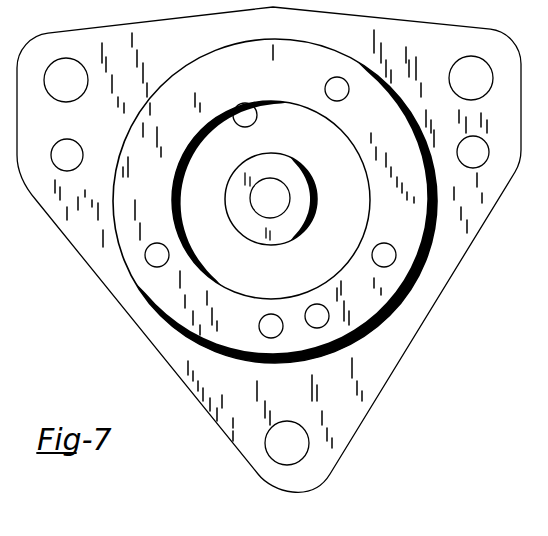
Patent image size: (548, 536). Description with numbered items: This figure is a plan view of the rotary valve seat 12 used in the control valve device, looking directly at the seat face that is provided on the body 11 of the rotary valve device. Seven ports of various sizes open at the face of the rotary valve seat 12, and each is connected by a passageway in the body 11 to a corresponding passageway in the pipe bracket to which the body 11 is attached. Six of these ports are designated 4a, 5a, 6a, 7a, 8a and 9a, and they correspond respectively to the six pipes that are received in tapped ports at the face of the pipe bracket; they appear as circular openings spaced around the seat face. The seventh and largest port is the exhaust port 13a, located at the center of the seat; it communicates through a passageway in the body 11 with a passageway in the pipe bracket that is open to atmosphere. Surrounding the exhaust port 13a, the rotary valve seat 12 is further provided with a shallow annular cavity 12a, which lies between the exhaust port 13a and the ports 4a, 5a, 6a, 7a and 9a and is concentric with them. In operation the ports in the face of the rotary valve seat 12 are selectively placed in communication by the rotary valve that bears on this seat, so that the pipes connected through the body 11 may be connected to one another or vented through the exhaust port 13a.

The port 4a is at (147, 263).
The port 5a is at (247, 116).
The port 6a is at (259, 326).
The port 7a is at (317, 316).
The port 8a is at (337, 90).
The port 9a is at (383, 254).
The body 11 is at (85, 241).
The rotary valve seat 12 is at (394, 278).
The shallow annular cavity 12a is at (356, 226).
The exhaust port 13a is at (265, 206).